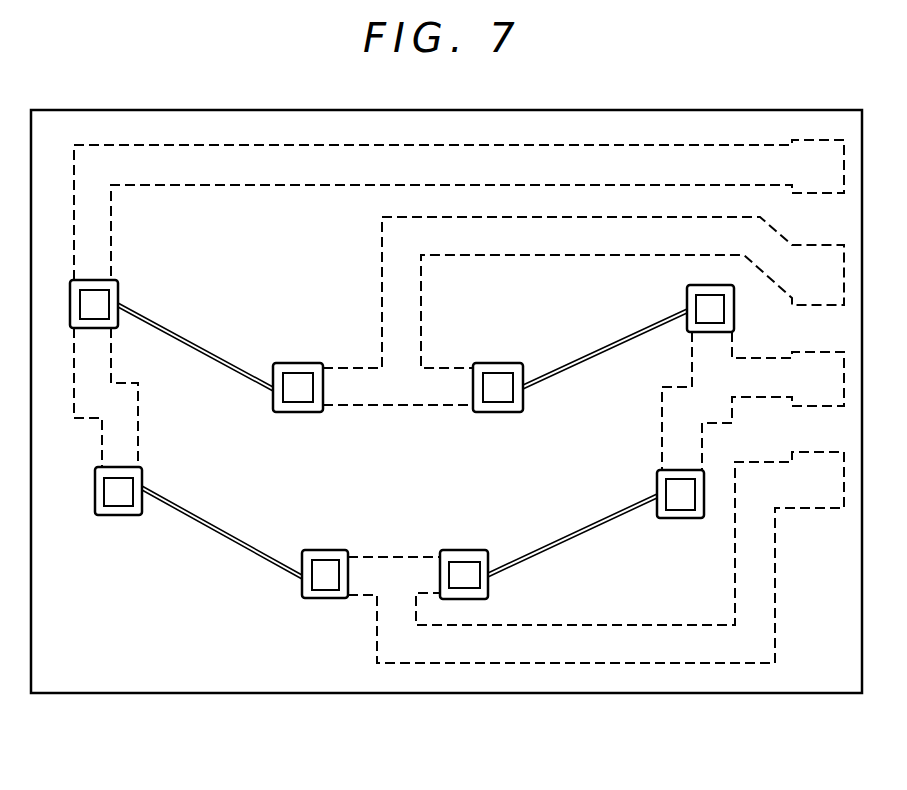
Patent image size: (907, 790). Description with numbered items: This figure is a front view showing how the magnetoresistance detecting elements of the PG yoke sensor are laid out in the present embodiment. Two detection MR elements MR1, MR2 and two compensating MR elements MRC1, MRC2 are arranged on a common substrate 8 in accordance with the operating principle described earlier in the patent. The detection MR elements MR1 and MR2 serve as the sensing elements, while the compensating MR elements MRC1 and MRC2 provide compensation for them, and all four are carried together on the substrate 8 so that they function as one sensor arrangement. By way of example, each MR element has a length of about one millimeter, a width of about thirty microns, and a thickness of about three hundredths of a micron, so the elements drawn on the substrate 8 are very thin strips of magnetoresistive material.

The substrate 8 is at (766, 110).
The compensating MR element MRC1 is at (560, 370).
The compensating MR element MRC2 is at (212, 357).
The detection MR element MR1 is at (563, 540).
The detection MR element MR2 is at (220, 535).